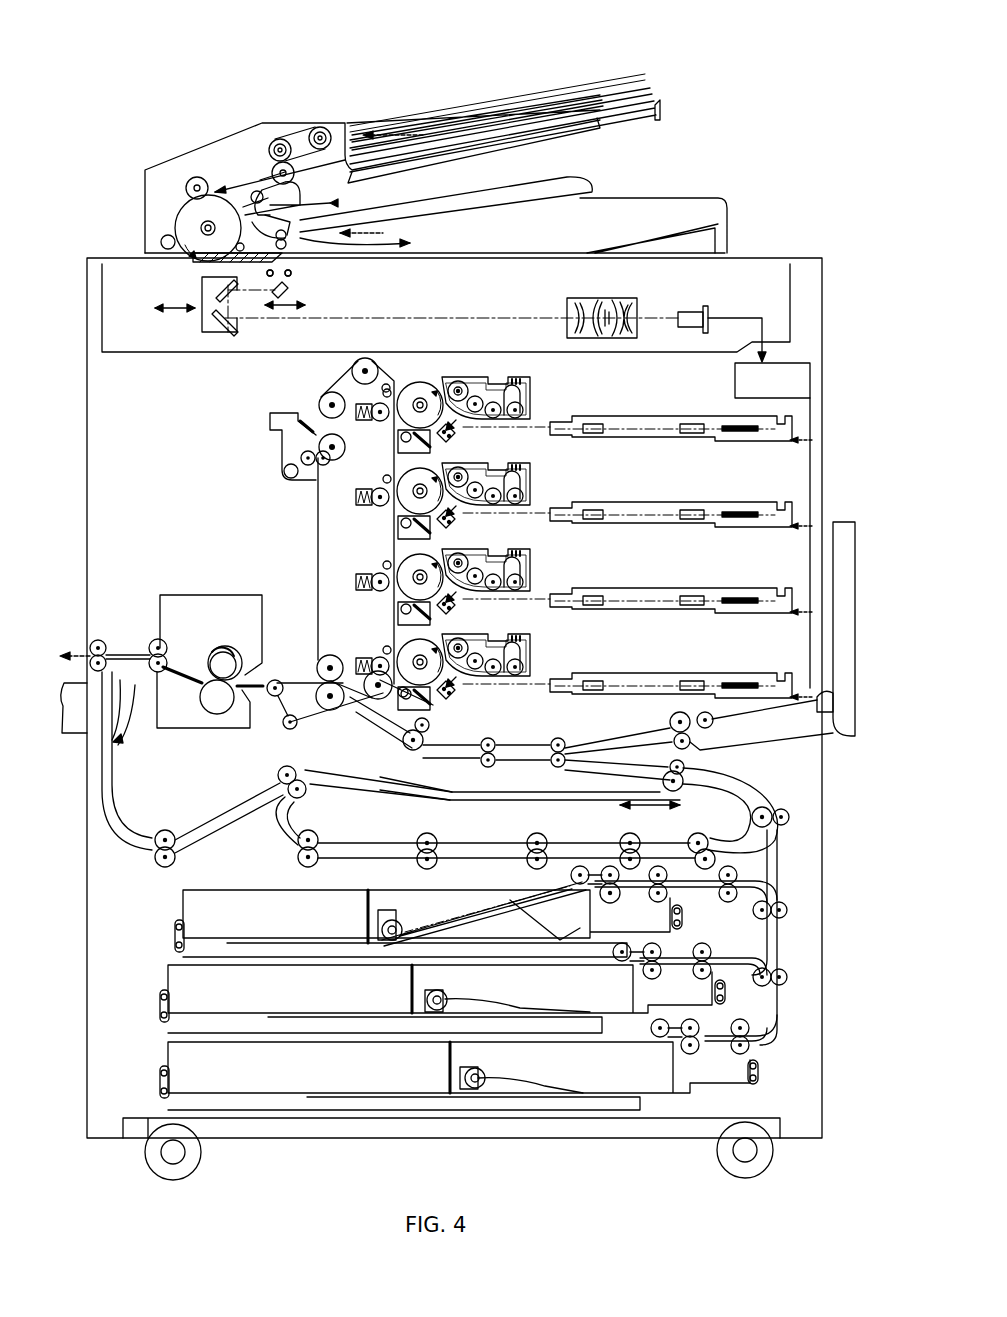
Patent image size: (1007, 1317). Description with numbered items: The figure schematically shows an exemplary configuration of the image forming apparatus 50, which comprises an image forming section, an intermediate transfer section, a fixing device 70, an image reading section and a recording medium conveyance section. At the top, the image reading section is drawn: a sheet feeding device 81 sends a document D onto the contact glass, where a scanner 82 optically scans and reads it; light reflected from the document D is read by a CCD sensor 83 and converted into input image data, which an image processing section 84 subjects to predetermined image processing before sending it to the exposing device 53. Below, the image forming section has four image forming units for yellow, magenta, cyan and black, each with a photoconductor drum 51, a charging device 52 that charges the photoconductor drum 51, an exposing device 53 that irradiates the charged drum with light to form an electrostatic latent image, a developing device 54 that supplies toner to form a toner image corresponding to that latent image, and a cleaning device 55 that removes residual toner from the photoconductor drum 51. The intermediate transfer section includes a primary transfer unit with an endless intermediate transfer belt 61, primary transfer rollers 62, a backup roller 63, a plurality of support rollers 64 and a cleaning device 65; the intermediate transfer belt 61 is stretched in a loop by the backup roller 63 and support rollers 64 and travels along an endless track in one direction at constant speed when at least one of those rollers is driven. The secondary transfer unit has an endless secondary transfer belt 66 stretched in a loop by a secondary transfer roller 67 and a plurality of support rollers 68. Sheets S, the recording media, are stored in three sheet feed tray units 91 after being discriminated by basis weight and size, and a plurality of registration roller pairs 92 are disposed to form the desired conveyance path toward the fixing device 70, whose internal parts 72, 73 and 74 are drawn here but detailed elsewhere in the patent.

The image forming apparatus 50 is at (760, 74).
The photoconductor drum 51 is at (416, 388).
The charging device 52 is at (455, 440).
The exposing device 53 is at (650, 417).
The developing device 54 is at (524, 380).
The cleaning device 55 is at (400, 478).
The intermediate transfer belt 61 is at (317, 505).
The primary transfer roller 62 is at (376, 422).
The backup roller 63 is at (326, 658).
The support rollers 64 is at (318, 395).
The cleaning device 65 is at (282, 470).
The secondary transfer belt 66 is at (298, 720).
The secondary transfer roller 67 is at (325, 684).
The support rollers 68 is at (284, 727).
The fixing device 70 is at (217, 592).
The heater 72 is at (212, 652).
The fixing roller 73 is at (232, 646).
The pressure roller 74 is at (216, 716).
The sheet feeding device 81 is at (146, 176).
The scanner 82 is at (120, 258).
The CCD sensor 83 is at (707, 312).
The image processing section 84 is at (806, 388).
The sheet feed tray unit 91 is at (183, 918).
The registration roller pairs 92 is at (150, 648).
The document D is at (522, 113).
The sheet S is at (482, 905).